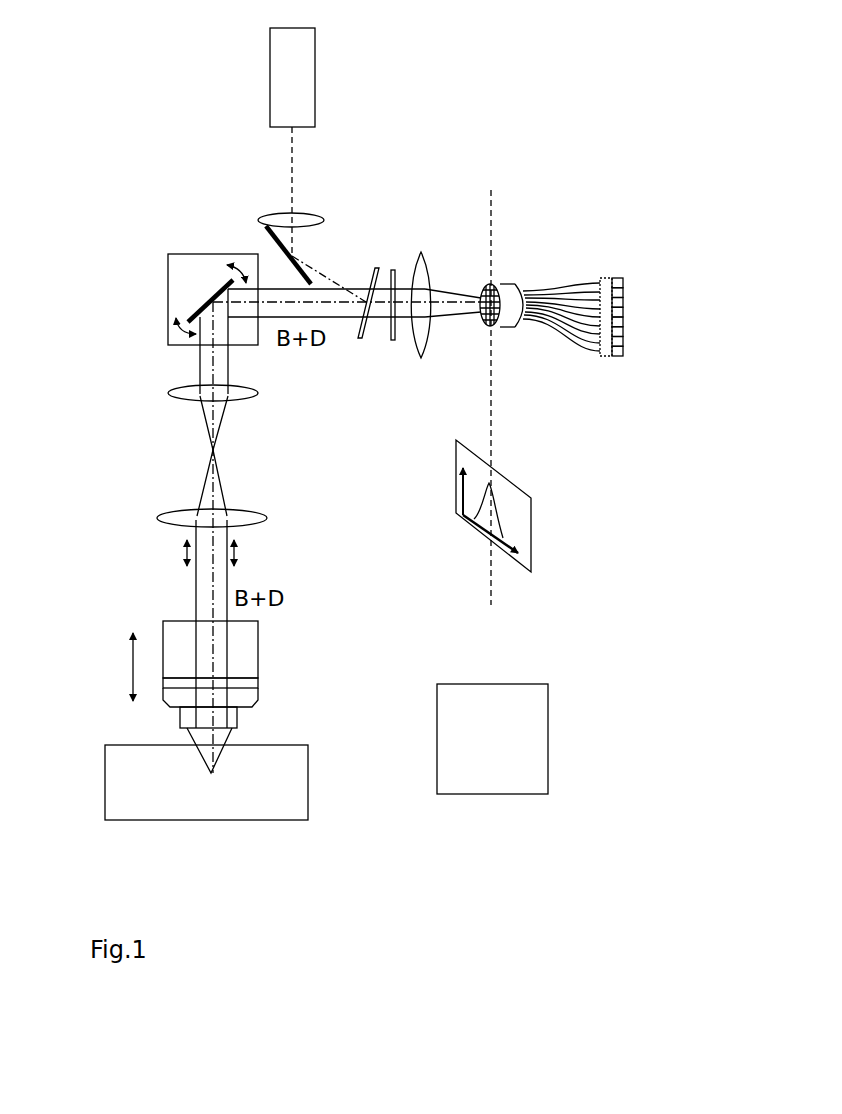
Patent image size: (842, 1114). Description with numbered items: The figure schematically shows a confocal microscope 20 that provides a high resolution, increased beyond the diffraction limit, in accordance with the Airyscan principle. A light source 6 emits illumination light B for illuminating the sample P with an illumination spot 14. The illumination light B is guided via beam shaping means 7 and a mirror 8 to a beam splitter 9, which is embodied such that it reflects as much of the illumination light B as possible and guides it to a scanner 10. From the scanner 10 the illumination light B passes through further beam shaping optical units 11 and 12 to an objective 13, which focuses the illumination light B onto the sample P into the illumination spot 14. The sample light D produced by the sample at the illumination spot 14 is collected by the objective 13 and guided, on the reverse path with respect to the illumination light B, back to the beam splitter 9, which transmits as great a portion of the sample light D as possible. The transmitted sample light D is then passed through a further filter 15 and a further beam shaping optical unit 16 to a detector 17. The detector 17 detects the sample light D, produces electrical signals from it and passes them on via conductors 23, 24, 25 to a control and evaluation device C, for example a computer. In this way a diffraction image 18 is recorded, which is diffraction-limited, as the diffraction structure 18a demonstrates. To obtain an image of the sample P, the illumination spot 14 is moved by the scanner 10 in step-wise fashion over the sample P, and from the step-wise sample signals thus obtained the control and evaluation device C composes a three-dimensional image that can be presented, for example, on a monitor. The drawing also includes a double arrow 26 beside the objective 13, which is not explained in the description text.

The light source 6 is at (316, 96).
The beam shaping means 7 is at (324, 219).
The mirror 8 is at (265, 228).
The beam splitter 9 is at (362, 340).
The scanner 10 is at (192, 254).
The beam shaping optical unit 11 is at (258, 393).
The beam shaping optical unit 12 is at (267, 518).
The objective 13 is at (258, 660).
The illumination spot 14 is at (211, 775).
The filter 15 is at (395, 262).
The beam shaping optical unit 16 is at (420, 352).
The detector 17 is at (491, 286).
The diffraction image 18 is at (492, 330).
The diffraction structure 18a is at (494, 498).
The confocal microscope 20 is at (99, 84).
The conductor 23 is at (620, 284).
The conductor 24 is at (620, 284).
The conductor 25 is at (614, 265).
The focusing movement 26 is at (130, 660).
The illumination light B is at (280, 192).
The sample light D is at (448, 281).
The sample P is at (280, 790).
The control and evaluation device C is at (492, 739).